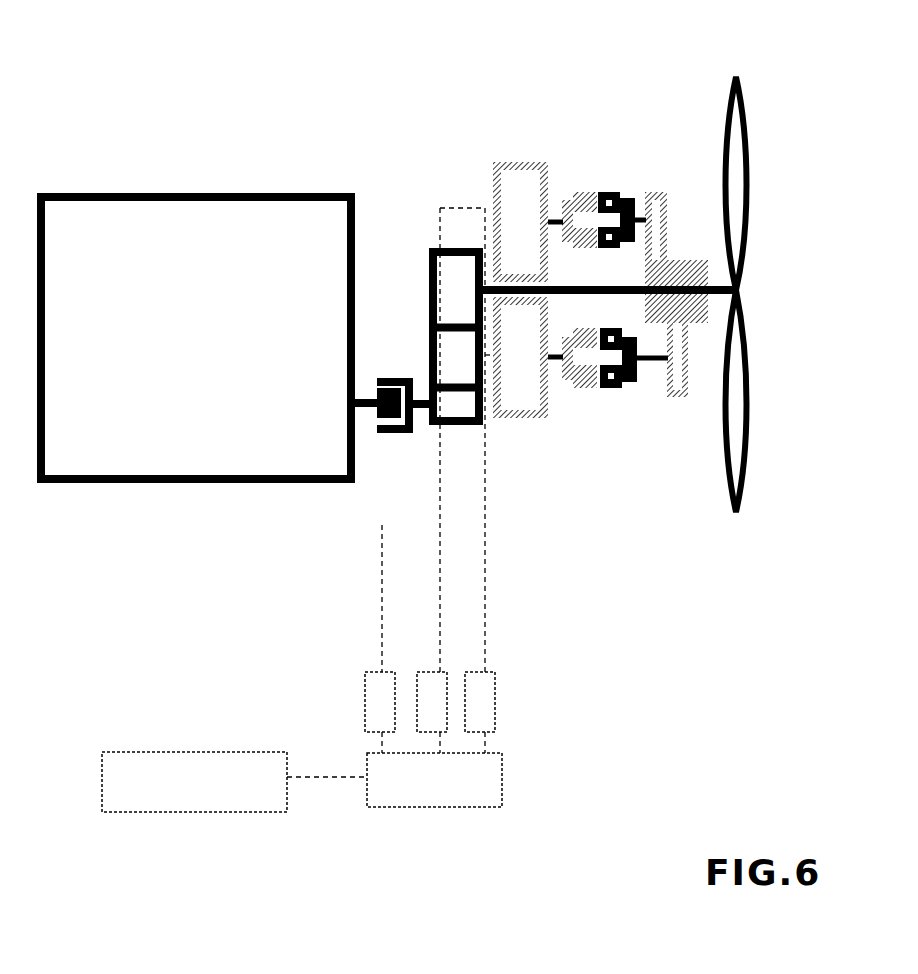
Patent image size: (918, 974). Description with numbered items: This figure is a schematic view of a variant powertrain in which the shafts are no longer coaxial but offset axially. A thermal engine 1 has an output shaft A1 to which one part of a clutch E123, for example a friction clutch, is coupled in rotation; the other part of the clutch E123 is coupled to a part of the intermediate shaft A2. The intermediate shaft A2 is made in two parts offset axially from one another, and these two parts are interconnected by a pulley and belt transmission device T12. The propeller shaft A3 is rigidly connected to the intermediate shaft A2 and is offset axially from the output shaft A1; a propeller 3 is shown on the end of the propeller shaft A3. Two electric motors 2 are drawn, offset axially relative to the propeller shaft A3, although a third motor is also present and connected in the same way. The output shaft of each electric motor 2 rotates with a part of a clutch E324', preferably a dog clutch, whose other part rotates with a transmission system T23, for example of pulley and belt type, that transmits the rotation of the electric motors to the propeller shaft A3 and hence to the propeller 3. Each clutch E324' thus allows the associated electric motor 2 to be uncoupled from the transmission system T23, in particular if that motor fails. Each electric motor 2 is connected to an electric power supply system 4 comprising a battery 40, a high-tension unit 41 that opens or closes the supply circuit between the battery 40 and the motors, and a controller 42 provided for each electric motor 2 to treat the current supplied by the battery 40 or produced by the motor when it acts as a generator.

The thermal engine 1 is at (165, 353).
The output shaft A1 is at (361, 412).
The clutch E123 is at (378, 368).
The pulley and belt transmission device T12 is at (467, 434).
The intermediate shaft A2 is at (483, 272).
The electric motor 2 is at (515, 193).
The clutch E324' is at (597, 271).
The transmission system T23 is at (670, 404).
The propeller shaft A3 is at (717, 274).
The propeller 3 is at (770, 124).
The electric power supply system 4 is at (357, 510).
The battery 40 is at (216, 793).
The high-tension unit 41 is at (447, 793).
The controller 42 is at (512, 699).